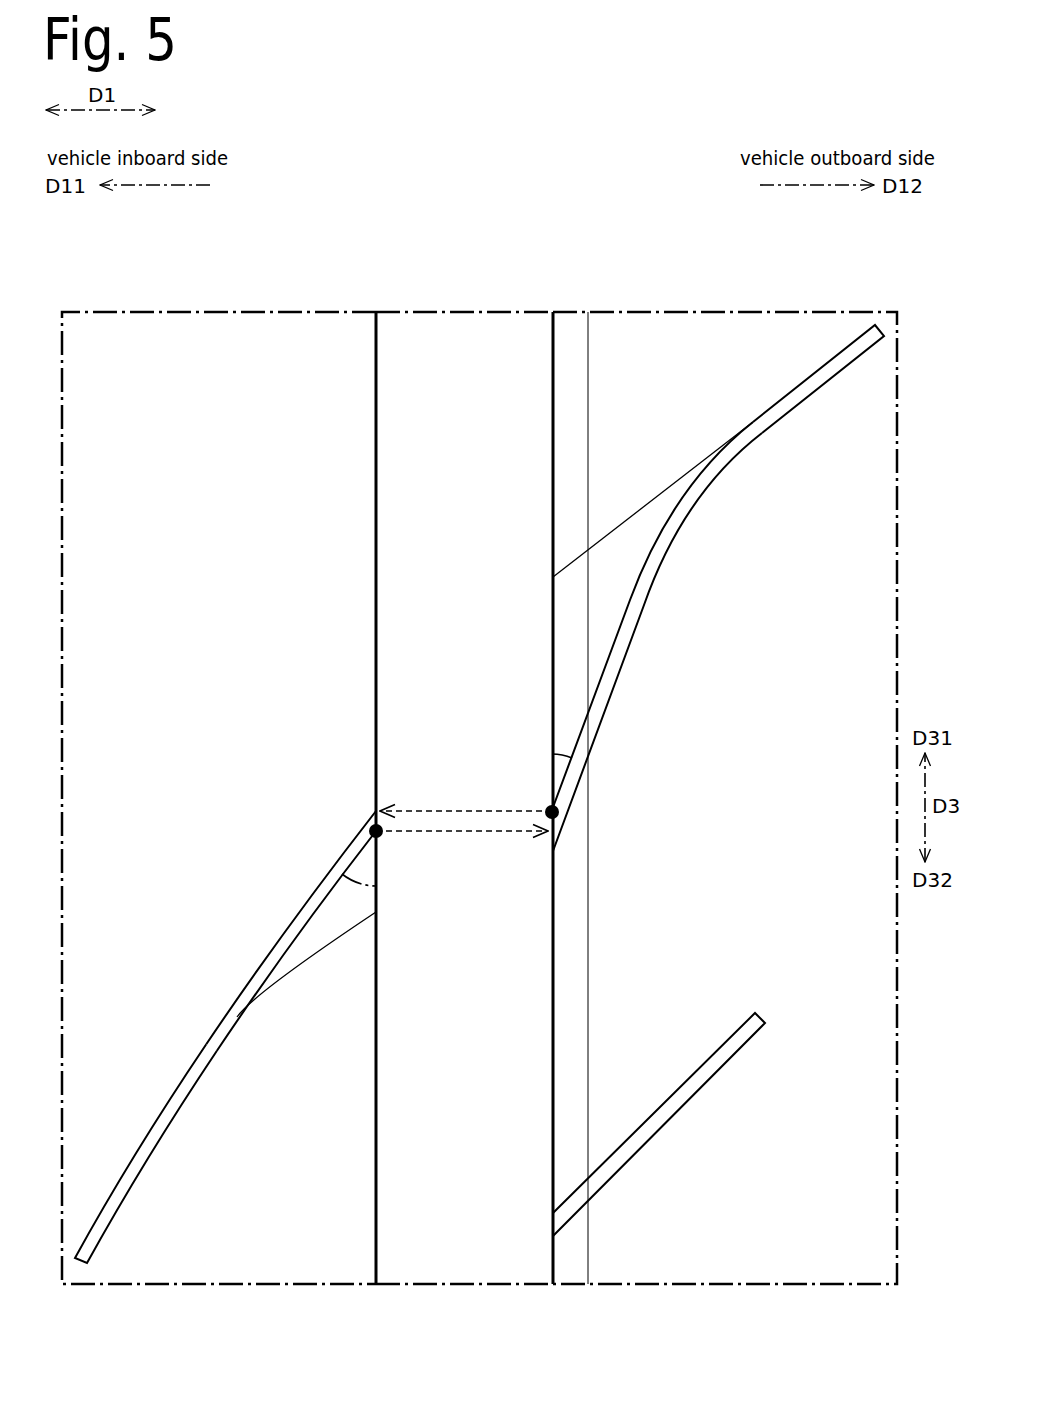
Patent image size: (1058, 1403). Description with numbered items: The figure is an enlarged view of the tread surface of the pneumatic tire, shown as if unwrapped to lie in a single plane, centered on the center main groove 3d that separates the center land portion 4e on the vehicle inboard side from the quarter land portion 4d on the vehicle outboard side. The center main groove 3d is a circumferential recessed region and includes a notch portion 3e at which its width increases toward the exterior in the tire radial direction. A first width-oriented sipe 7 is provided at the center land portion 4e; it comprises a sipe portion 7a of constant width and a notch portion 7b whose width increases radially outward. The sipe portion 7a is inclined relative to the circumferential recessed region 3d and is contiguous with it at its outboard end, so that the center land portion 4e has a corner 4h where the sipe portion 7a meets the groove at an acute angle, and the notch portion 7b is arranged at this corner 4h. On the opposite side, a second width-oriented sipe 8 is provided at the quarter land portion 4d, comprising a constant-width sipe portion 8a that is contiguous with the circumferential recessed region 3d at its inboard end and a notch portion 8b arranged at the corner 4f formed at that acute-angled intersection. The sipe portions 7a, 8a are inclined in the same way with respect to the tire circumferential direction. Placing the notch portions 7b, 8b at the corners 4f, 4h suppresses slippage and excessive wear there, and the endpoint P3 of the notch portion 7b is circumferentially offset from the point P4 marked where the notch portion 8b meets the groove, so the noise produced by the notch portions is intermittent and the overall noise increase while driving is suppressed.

The center main groove 3d is at (457, 330).
The notch portion 3e is at (575, 356).
The quarter land portion 4d is at (749, 328).
The center land portion 4e is at (231, 316).
The corner 4f is at (550, 768).
The corner 4h is at (381, 871).
The first width-oriented sipe 7 is at (225, 1037).
The sipe portion 7a is at (160, 1137).
The notch portion 7b is at (315, 930).
The second width-oriented sipe 8 is at (718, 588).
The sipe portion 8a is at (731, 471).
The notch portion 8b is at (608, 606).
The endpoint P3 is at (388, 845).
The connection point P4 is at (539, 801).